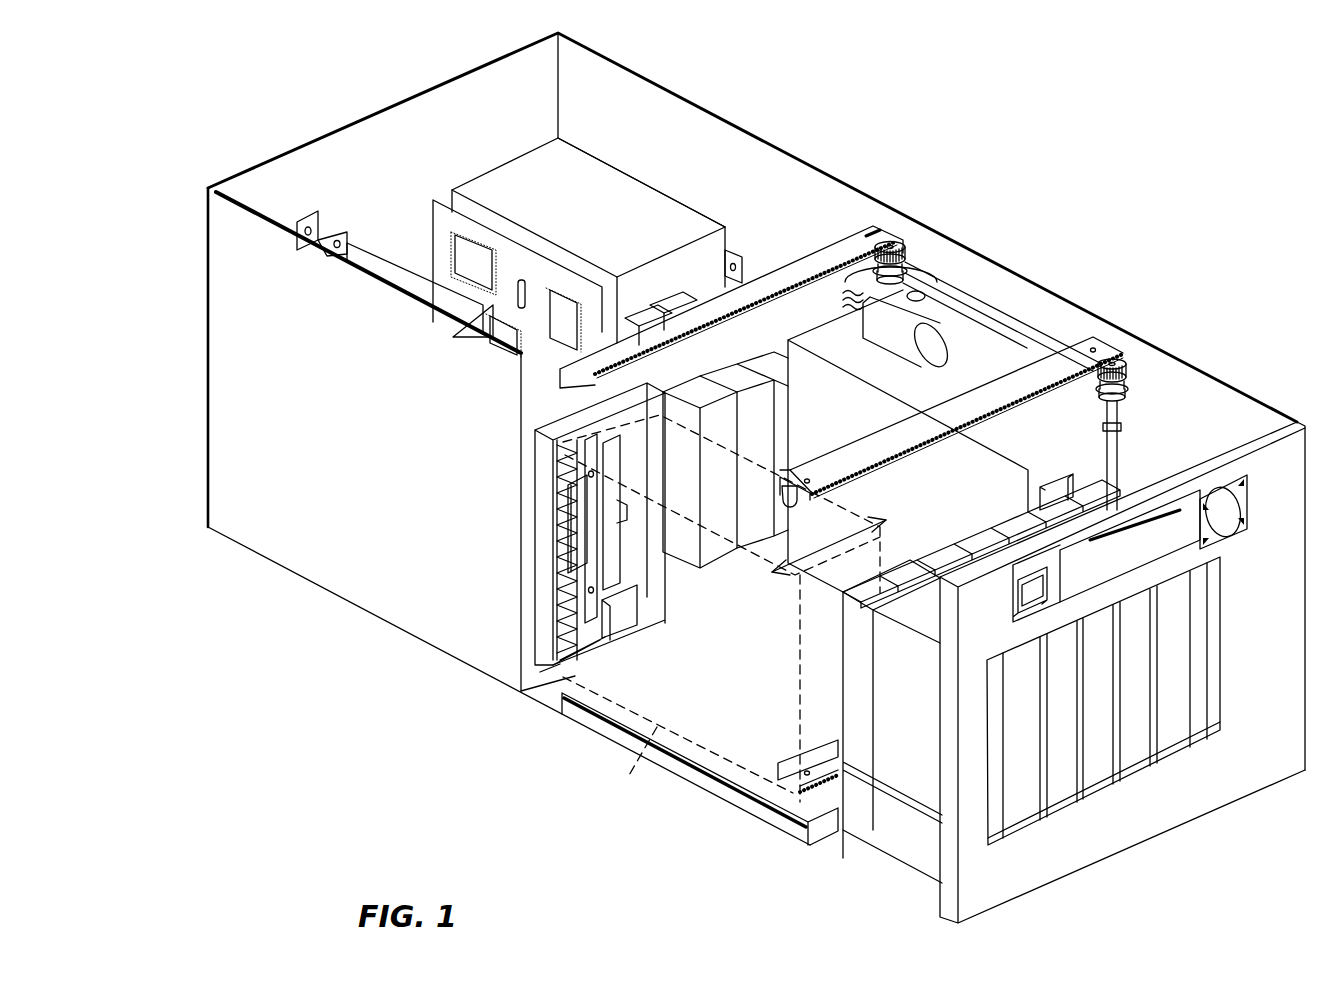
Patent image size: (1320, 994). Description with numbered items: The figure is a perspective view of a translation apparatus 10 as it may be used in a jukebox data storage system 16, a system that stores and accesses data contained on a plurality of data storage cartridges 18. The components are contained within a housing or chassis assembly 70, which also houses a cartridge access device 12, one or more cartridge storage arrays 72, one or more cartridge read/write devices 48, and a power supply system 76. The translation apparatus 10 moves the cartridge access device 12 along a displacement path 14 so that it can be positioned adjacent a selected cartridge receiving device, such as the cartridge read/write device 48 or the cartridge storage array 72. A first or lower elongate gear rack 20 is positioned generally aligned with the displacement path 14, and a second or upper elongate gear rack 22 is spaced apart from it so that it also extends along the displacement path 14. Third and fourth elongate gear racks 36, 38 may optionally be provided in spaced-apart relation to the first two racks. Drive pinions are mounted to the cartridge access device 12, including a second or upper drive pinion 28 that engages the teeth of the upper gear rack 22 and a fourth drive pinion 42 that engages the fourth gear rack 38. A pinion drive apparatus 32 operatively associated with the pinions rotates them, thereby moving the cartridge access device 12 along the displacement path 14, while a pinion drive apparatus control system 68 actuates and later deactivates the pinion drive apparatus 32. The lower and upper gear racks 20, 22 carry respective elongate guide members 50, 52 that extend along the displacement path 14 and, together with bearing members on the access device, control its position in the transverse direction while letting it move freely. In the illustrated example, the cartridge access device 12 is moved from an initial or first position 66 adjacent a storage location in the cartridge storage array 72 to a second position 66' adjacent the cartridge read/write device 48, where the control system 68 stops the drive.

The translation apparatus 10 is at (1092, 227).
The cartridge access device 12 is at (837, 342).
The displacement path 14 is at (827, 548).
The jukebox data storage system 16 is at (205, 322).
The data storage cartridges 18 is at (650, 302).
The first or lower elongate gear rack 20 is at (775, 785).
The second or upper elongate gear rack 22 is at (1113, 341).
The second or upper drive pinion 28 is at (1130, 380).
The pinion drive apparatus 32 is at (895, 343).
The third elongate gear rack 36 is at (573, 678).
The fourth elongate gear rack 38 is at (888, 226).
The fourth drive pinion 42 is at (917, 258).
The cartridge read/write device 48 is at (530, 650).
The elongate guide member 50 is at (787, 765).
The elongate guide member 52 is at (797, 490).
The first position 66 is at (1006, 665).
The second position 66' is at (721, 613).
The pinion drive apparatus control system 68 is at (431, 227).
The housing or chassis assembly 70 is at (790, 827).
The cartridge storage array 72 is at (862, 740).
The power supply system 76 is at (622, 190).